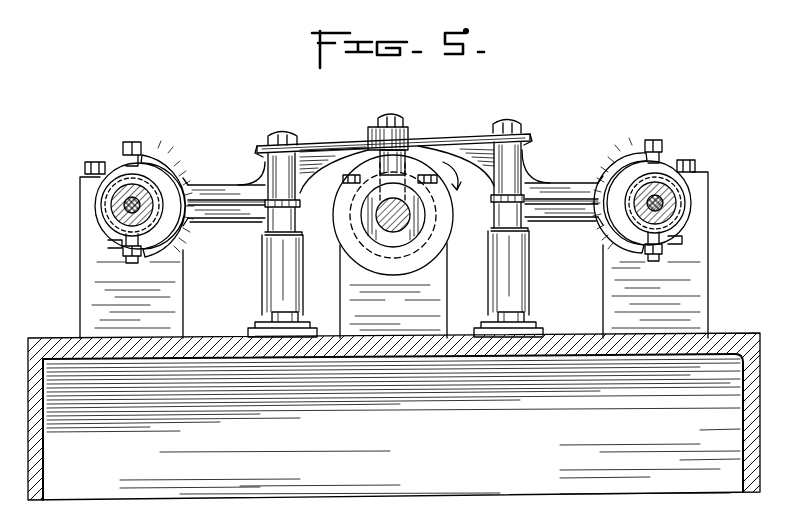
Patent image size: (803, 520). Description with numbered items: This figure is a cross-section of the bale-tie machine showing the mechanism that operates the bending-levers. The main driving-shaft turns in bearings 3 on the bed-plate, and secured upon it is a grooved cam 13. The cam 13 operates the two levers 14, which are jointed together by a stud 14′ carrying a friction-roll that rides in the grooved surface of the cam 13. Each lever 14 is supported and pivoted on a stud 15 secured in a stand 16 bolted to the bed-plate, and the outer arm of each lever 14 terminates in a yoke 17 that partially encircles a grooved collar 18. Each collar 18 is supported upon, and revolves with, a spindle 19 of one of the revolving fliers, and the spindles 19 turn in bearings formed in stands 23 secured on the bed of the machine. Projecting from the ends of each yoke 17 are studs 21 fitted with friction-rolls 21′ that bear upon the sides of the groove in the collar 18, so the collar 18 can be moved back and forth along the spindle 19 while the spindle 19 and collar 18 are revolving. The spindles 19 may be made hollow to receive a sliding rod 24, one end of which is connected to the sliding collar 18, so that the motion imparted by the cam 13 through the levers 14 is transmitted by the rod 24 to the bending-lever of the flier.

The bearings 3 is at (393, 290).
The cam 13 is at (452, 252).
The levers 14 is at (393, 171).
The stud 14′ is at (391, 113).
The studs 15 is at (284, 130).
The stands 16 is at (396, 239).
The yokes 17 is at (172, 175).
The grooved collars 18 is at (103, 210).
The spindles 19 is at (118, 215).
The studs 21 is at (134, 138).
The friction-rolls 21′ is at (122, 165).
The stands 23 is at (395, 255).
The sliding rod 24 is at (120, 199).